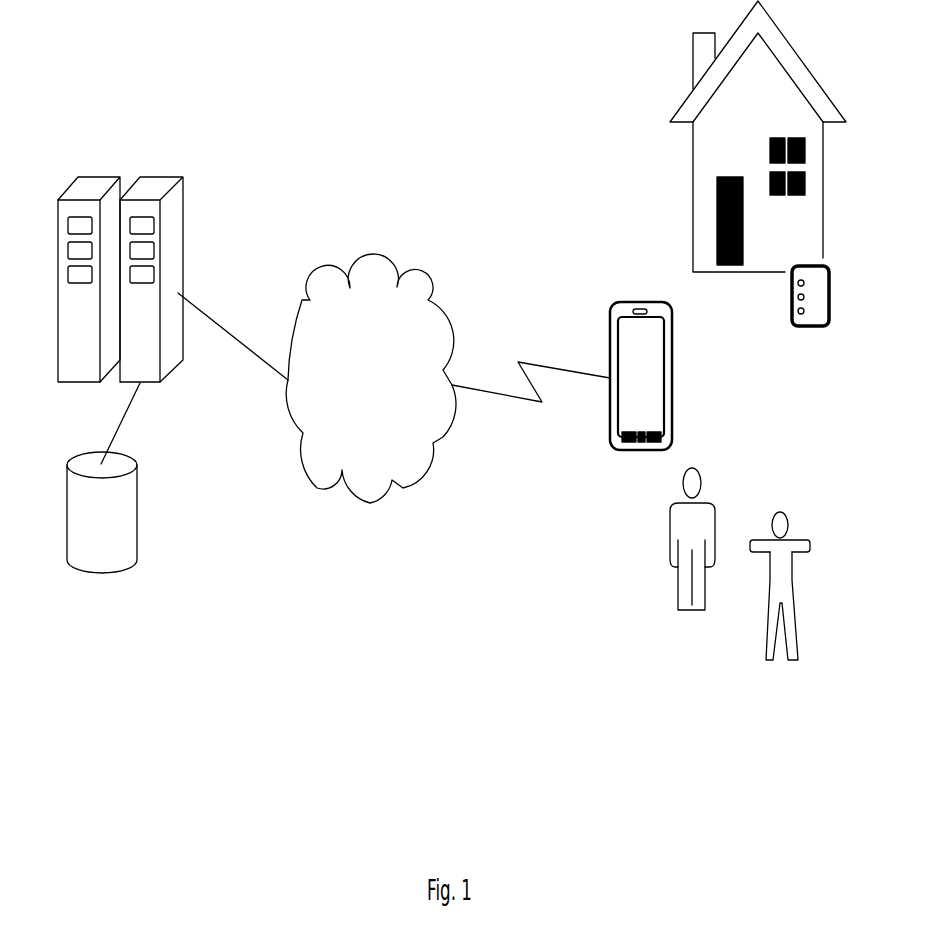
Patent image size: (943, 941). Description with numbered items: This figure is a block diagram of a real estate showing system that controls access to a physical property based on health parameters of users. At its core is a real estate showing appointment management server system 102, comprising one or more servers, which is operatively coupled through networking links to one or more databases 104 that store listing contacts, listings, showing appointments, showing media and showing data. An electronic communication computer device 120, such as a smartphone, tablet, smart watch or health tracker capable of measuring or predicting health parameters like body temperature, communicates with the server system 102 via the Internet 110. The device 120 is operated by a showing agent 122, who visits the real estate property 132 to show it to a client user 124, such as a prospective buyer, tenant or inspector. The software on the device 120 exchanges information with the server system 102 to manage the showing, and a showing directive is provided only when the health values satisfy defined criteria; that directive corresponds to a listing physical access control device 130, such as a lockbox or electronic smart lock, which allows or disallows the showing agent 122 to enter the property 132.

The real estate showing appointment management server system 102 is at (122, 197).
The databases 104 is at (103, 568).
The Internet 110 is at (372, 501).
The electronic communication computer device 120 is at (616, 449).
The showing agent 122 is at (678, 585).
The client user 124 is at (765, 660).
The listing physical access control device 130 is at (830, 293).
The real estate property 132 is at (823, 170).